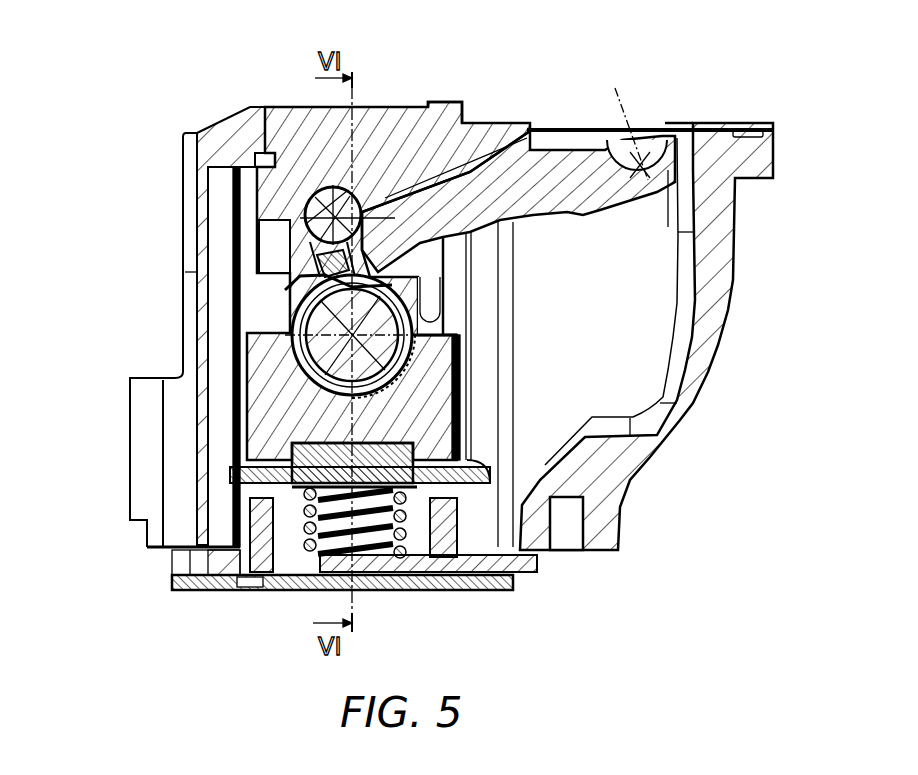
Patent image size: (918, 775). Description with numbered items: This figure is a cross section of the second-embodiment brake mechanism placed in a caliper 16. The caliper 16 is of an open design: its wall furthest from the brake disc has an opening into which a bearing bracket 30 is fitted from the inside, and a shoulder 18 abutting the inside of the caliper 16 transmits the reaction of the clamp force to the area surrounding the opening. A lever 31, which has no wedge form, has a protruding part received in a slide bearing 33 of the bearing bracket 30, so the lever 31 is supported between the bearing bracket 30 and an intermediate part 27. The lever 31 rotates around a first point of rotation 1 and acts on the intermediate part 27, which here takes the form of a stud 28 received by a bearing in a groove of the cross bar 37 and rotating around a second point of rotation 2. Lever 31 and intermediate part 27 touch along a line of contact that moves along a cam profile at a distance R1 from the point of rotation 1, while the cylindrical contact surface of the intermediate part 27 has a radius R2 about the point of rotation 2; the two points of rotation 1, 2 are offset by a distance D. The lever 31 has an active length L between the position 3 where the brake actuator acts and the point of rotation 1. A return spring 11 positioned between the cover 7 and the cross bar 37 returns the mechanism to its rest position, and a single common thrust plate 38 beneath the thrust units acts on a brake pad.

The first point of rotation 1 is at (268, 112).
The second point of rotation 2 is at (240, 435).
The position where the brake actuator acts on the lever 3 is at (640, 130).
The cover 7 is at (520, 577).
The return spring 11 is at (290, 588).
The caliper 16 is at (737, 235).
The shoulder 18 is at (262, 152).
The intermediate part 27 is at (296, 330).
The stud 28 is at (352, 335).
The bearing bracket 30 is at (410, 112).
The lever 31 is at (580, 165).
The slide bearing 33 is at (316, 182).
The cross bar 37 is at (262, 390).
The thrust plate 38 is at (407, 593).
The offset distance D is at (363, 200).
The active length L is at (490, 138).
The cam profile distance R1 is at (305, 215).
The radius of intermediate part contact surface R2 is at (305, 300).